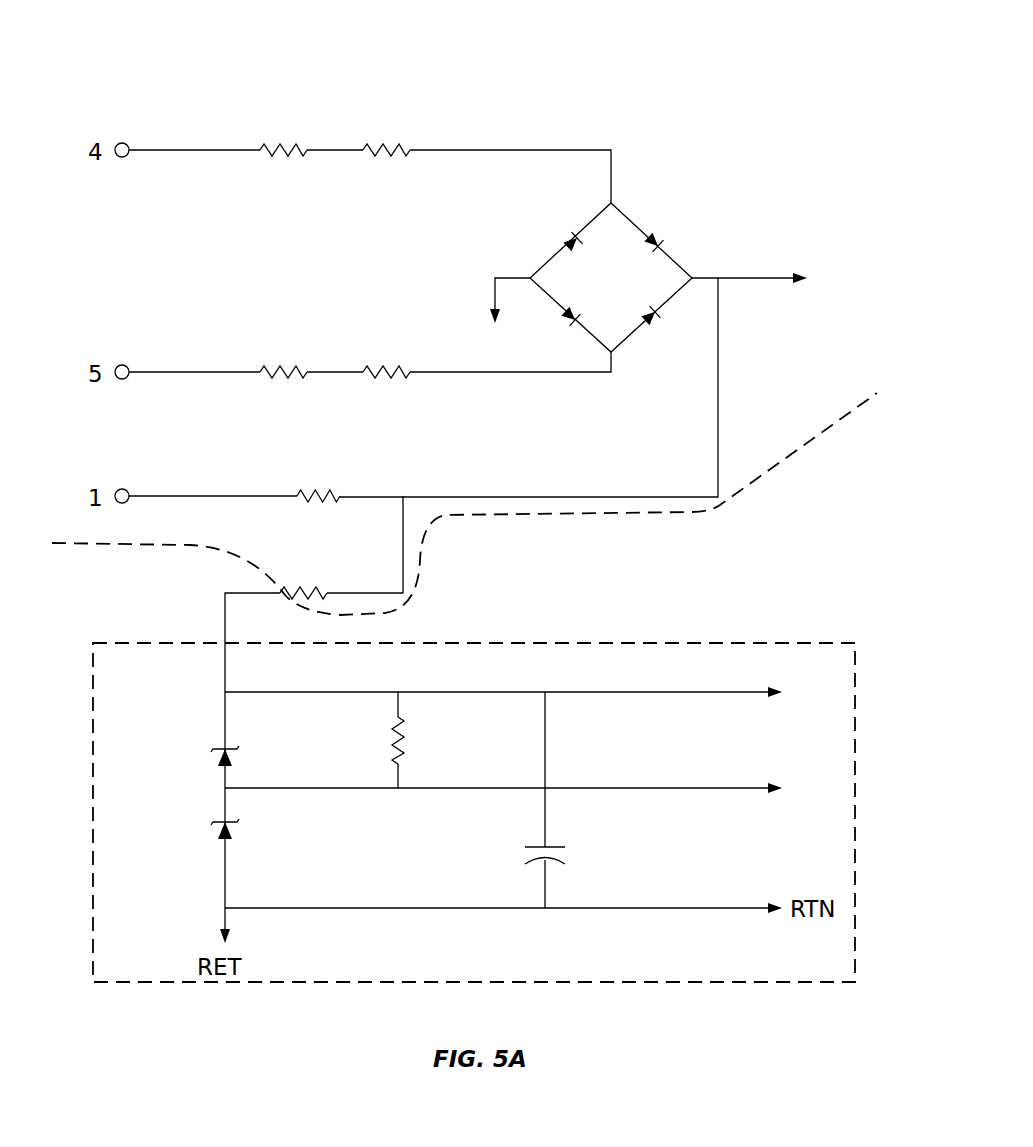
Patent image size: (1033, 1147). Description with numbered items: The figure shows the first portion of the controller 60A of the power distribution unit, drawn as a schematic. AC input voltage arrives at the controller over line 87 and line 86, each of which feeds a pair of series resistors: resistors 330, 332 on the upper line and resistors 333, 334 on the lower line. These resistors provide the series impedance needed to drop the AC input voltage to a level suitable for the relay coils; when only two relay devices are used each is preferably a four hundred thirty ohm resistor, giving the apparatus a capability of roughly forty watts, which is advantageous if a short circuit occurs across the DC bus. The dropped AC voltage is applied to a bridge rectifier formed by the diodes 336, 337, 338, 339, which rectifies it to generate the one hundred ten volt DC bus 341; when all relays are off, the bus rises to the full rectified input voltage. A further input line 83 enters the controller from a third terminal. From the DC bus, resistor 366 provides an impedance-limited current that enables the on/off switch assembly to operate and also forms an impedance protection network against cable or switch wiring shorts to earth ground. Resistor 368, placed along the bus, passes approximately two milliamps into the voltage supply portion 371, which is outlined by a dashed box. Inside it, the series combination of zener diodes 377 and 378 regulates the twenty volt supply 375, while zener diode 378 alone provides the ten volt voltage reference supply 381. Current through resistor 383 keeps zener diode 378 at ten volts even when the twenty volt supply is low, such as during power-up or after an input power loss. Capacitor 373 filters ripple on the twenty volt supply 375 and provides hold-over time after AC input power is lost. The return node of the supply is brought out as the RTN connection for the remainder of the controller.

The power supply circuit 60A is at (652, 80).
The resistor 330 is at (284, 80).
The resistor 332 is at (386, 80).
The resistor 333 is at (282, 306).
The resistor 334 is at (385, 306).
The diode 336 is at (691, 168).
The diode 337 is at (666, 397).
The diode 338 is at (532, 378).
The diode 339 is at (497, 191).
The 110 volt DC bus 341 is at (755, 282).
The resistor 366 is at (343, 443).
The resistor 368 is at (307, 528).
The voltage supply portion 371 is at (795, 640).
The capacitor 373 is at (622, 815).
The 20 volt supply 375 is at (632, 690).
The zener diode 377 is at (262, 738).
The zener diode 378 is at (293, 832).
The 10 volt voltage reference supply 381 is at (602, 787).
The resistor 383 is at (463, 757).
The input line from terminal 1 83 is at (218, 498).
The line 86 is at (190, 374).
The line 87 is at (190, 152).